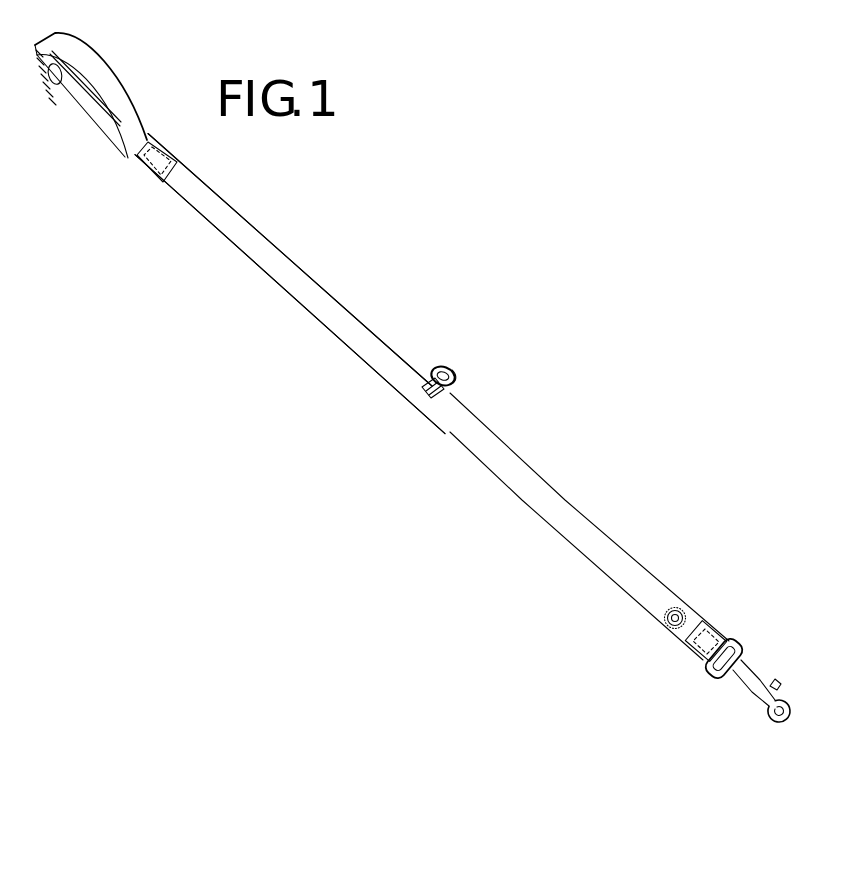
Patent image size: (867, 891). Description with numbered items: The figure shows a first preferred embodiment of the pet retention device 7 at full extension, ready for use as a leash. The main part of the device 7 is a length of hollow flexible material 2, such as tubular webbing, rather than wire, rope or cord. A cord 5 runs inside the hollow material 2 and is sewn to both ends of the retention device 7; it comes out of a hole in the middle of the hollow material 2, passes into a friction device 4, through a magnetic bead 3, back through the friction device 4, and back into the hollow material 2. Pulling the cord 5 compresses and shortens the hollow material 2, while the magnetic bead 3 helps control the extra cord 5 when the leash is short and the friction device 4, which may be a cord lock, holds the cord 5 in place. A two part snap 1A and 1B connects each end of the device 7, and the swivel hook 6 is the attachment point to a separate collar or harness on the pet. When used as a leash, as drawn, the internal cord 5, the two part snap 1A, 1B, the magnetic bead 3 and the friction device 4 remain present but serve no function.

The two part snap first part 1A is at (57, 86).
The two part snap second part 1B is at (675, 627).
The hollow flexible material 2 is at (227, 227).
The magnetic bead 3 is at (448, 367).
The friction device 4 is at (434, 397).
The cord 5 is at (456, 382).
The swivel hook 6 is at (778, 724).
The pet retention device 7 is at (343, 327).